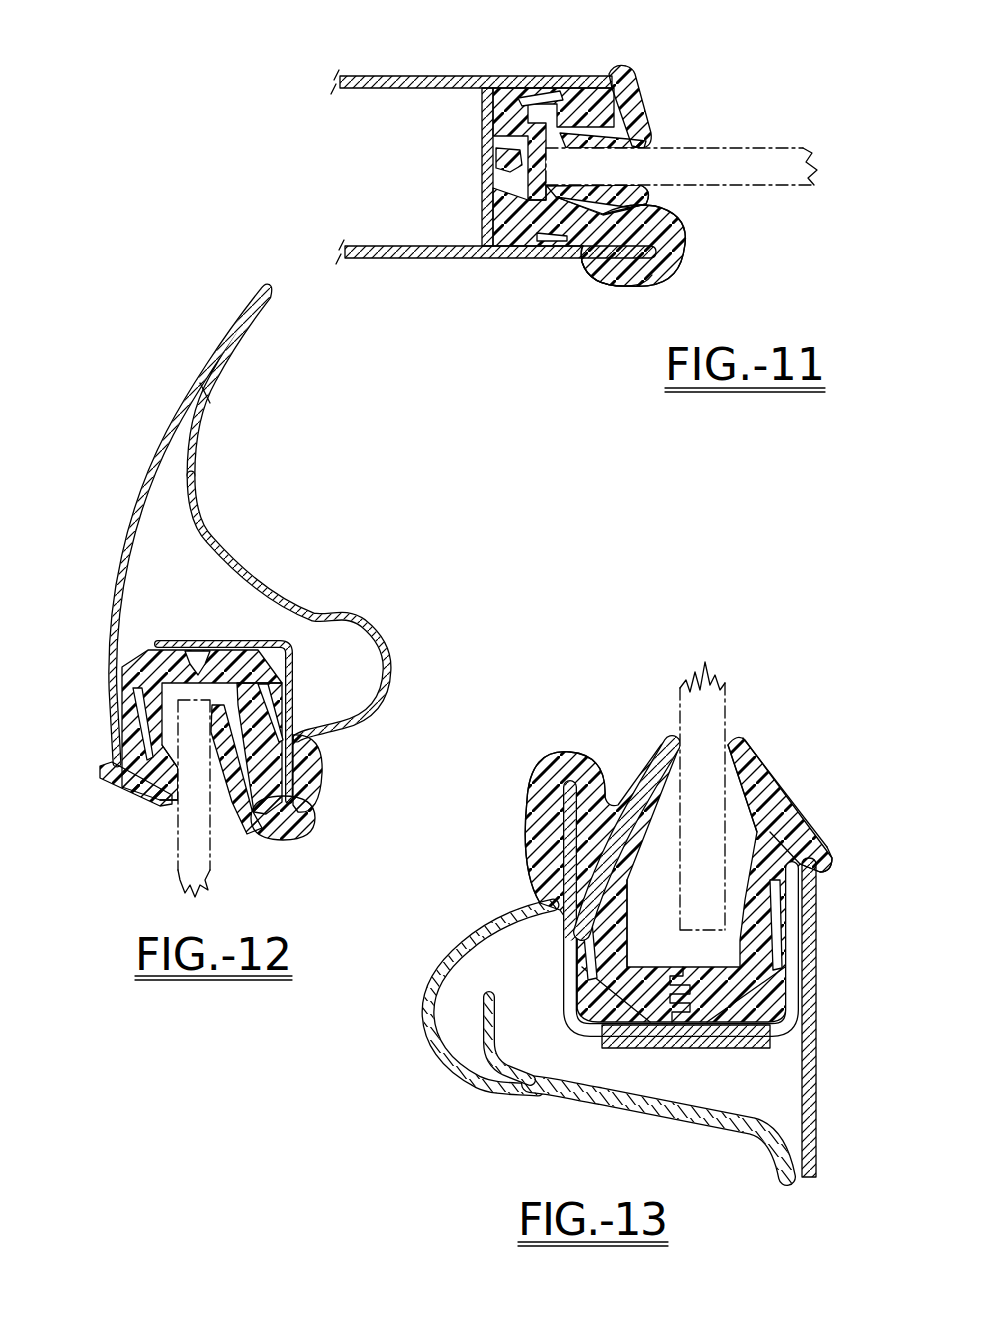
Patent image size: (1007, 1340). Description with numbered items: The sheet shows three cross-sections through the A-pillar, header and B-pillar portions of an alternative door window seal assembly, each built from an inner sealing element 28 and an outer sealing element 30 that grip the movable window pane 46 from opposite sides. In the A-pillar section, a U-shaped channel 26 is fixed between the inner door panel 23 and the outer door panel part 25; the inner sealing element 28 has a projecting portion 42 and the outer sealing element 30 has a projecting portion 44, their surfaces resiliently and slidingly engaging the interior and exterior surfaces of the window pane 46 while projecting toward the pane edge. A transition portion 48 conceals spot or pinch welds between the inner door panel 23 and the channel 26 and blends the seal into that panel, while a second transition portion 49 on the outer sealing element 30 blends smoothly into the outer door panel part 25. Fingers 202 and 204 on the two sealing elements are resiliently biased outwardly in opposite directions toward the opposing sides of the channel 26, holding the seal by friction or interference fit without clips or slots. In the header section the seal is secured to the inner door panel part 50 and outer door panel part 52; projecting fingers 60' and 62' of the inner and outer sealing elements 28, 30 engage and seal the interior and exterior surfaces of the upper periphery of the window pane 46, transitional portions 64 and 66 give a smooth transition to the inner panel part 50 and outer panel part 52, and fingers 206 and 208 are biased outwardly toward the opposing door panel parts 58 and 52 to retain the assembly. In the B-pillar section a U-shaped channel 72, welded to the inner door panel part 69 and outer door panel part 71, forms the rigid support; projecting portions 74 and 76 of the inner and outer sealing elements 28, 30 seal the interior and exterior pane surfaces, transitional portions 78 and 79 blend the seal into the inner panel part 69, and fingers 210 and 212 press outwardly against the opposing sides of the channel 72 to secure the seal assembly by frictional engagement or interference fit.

In FIG. 11, the inner door panel 23 is at (411, 260).
In FIG. 11, the outer door panel part 25 is at (362, 76).
In FIG. 11, the U-shaped channel 26 is at (483, 170).
In FIG. 11, the inner sealing element 28 is at (678, 250).
In FIG. 12, the inner sealing element 28 is at (298, 832).
In FIG. 13, the inner sealing element 28 is at (610, 885).
In FIG. 11, the outer sealing element 30 is at (580, 106).
In FIG. 12, the outer sealing element 30 is at (133, 727).
In FIG. 13, the outer sealing element 30 is at (780, 893).
In FIG. 11, the projecting portion 42 is at (598, 182).
In FIG. 11, the projecting portion 44 is at (585, 152).
In FIG. 11, the window pane 46 is at (763, 150).
In FIG. 12, the window pane 46 is at (180, 853).
In FIG. 13, the window pane 46 is at (717, 707).
In FIG. 11, the transition portion 48 is at (594, 265).
In FIG. 11, the second transition portion 49 is at (623, 68).
In FIG. 12, the inner door panel part 50 is at (388, 670).
In FIG. 12, the outer door panel part 52 is at (165, 437).
In FIG. 12, the door panel part 58 is at (197, 646).
In FIG. 12, the projecting finger 60' is at (242, 789).
In FIG. 12, the projecting finger 62' is at (135, 801).
In FIG. 12, the transitional portion 64 is at (320, 753).
In FIG. 12, the transitional portion 66 is at (100, 770).
In FIG. 13, the inner door panel part 69 is at (577, 1107).
In FIG. 13, the outer door panel part 71 is at (818, 1040).
In FIG. 13, the U-shaped channel 72 is at (566, 1013).
In FIG. 13, the projecting portion 74 is at (660, 742).
In FIG. 13, the projecting portion 76 is at (750, 758).
In FIG. 13, the transitional portion 78 is at (527, 840).
In FIG. 13, the transitional portion 79 is at (830, 870).
In FIG. 11, the finger 202 is at (550, 243).
In FIG. 11, the finger 204 is at (521, 97).
In FIG. 12, the finger 206 is at (273, 687).
In FIG. 12, the finger 208 is at (130, 690).
In FIG. 13, the finger 210 is at (582, 947).
In FIG. 13, the finger 212 is at (787, 943).